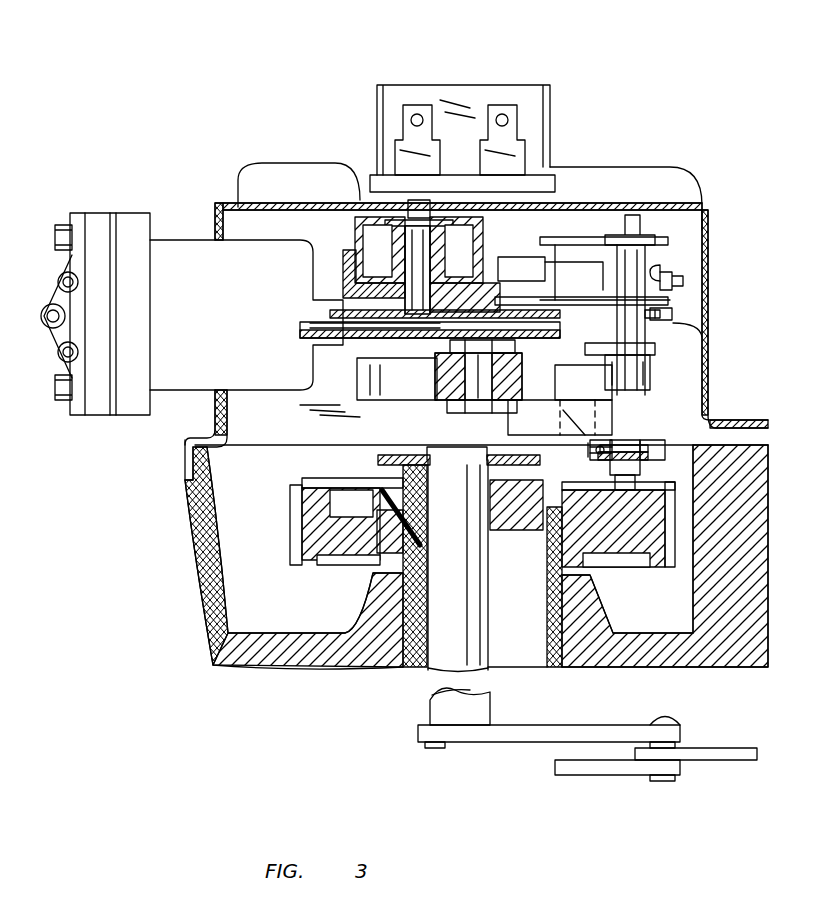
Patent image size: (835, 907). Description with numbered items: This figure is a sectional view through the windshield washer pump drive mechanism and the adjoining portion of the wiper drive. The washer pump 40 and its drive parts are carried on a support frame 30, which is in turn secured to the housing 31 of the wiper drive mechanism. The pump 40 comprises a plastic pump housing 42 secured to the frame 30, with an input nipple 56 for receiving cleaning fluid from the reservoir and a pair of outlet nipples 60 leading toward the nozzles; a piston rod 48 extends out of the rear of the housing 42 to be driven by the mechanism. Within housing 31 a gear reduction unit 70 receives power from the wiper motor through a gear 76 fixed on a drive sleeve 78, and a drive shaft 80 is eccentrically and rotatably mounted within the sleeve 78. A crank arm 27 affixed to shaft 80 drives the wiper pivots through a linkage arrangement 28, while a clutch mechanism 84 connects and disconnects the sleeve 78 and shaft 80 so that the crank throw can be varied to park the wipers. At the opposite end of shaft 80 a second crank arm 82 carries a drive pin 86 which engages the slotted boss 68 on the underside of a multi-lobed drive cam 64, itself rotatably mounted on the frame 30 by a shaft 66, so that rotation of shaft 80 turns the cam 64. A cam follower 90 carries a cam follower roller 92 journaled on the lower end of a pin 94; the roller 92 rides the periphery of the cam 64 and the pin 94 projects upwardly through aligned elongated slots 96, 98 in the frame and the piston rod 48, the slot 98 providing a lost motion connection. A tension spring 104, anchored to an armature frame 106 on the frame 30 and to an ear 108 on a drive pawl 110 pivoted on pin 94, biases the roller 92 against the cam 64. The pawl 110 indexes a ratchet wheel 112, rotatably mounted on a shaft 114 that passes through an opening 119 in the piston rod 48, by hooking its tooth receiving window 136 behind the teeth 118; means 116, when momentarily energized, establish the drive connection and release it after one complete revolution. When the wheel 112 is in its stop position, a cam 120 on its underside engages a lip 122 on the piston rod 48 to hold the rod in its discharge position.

The crank arm 27 is at (520, 735).
The linkage arrangement 28 is at (606, 777).
The support frame 30 is at (228, 212).
The housing of the wiper drive mechanism 31 is at (205, 625).
The washer pump 40 is at (160, 230).
The pump housing 42 is at (247, 306).
The piston rod 48 is at (660, 314).
The input nipple 56 is at (42, 330).
The outlet nipples 60 is at (60, 270).
The drive cam 64 is at (358, 385).
The shaft 66 is at (465, 412).
The boss 68 is at (612, 420).
The gear reduction unit 70 is at (290, 545).
The gear 76 is at (305, 478).
The drive sleeve 78 is at (405, 667).
The drive shaft 80 is at (467, 616).
The second crank arm 82 is at (376, 460).
The clutch mechanism 84 is at (628, 495).
The drive pin 86 is at (558, 465).
The cam follower 90 is at (656, 350).
The cam follower roller 92 is at (650, 372).
The pin 94 is at (630, 237).
The elongated slot in the frame 96 is at (685, 318).
The elongated slot in the piston rod 98 is at (672, 310).
The tension spring 104 is at (703, 208).
The armature frame 106 is at (528, 92).
The ear 108 is at (681, 278).
The drive pawl 110 is at (602, 276).
The ratchet wheel 112 is at (345, 255).
The shaft 114 is at (430, 323).
The means for establishing a drive connection 116 is at (466, 92).
The teeth 118 is at (343, 275).
The opening 119 is at (458, 315).
The cam 120 is at (521, 269).
The lip 122 is at (520, 290).
The tooth receiving window 136 is at (560, 250).